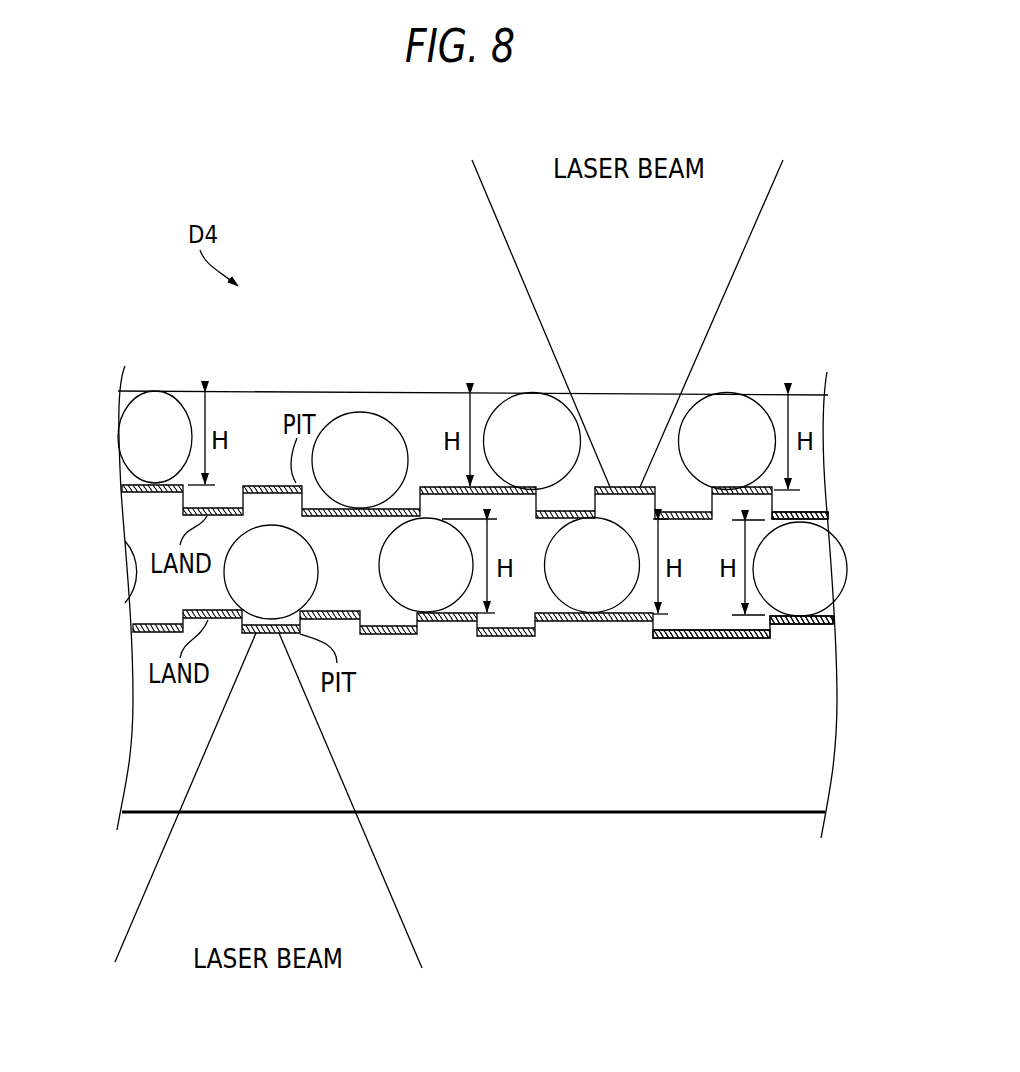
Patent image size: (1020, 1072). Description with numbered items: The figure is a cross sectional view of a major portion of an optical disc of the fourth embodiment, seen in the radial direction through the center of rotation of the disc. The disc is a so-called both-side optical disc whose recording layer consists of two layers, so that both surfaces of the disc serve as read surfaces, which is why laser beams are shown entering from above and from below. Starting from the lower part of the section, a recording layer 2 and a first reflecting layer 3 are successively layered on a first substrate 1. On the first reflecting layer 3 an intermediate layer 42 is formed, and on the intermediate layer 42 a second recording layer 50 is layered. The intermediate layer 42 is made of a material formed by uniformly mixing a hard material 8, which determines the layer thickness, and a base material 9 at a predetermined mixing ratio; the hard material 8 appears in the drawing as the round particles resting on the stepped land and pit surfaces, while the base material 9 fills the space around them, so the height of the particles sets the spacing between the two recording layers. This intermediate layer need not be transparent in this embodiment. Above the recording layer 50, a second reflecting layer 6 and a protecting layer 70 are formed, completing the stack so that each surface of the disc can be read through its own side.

The first substrate 1 is at (820, 756).
The recording layer 2 is at (818, 632).
The first reflecting layer 3 is at (825, 608).
The second reflecting layer 6 is at (812, 515).
The hard material 8 is at (133, 420).
The base material 9 is at (255, 410).
The intermediate layer 42 is at (82, 544).
The recording layer 50 is at (827, 527).
The protecting layer 70 is at (82, 434).